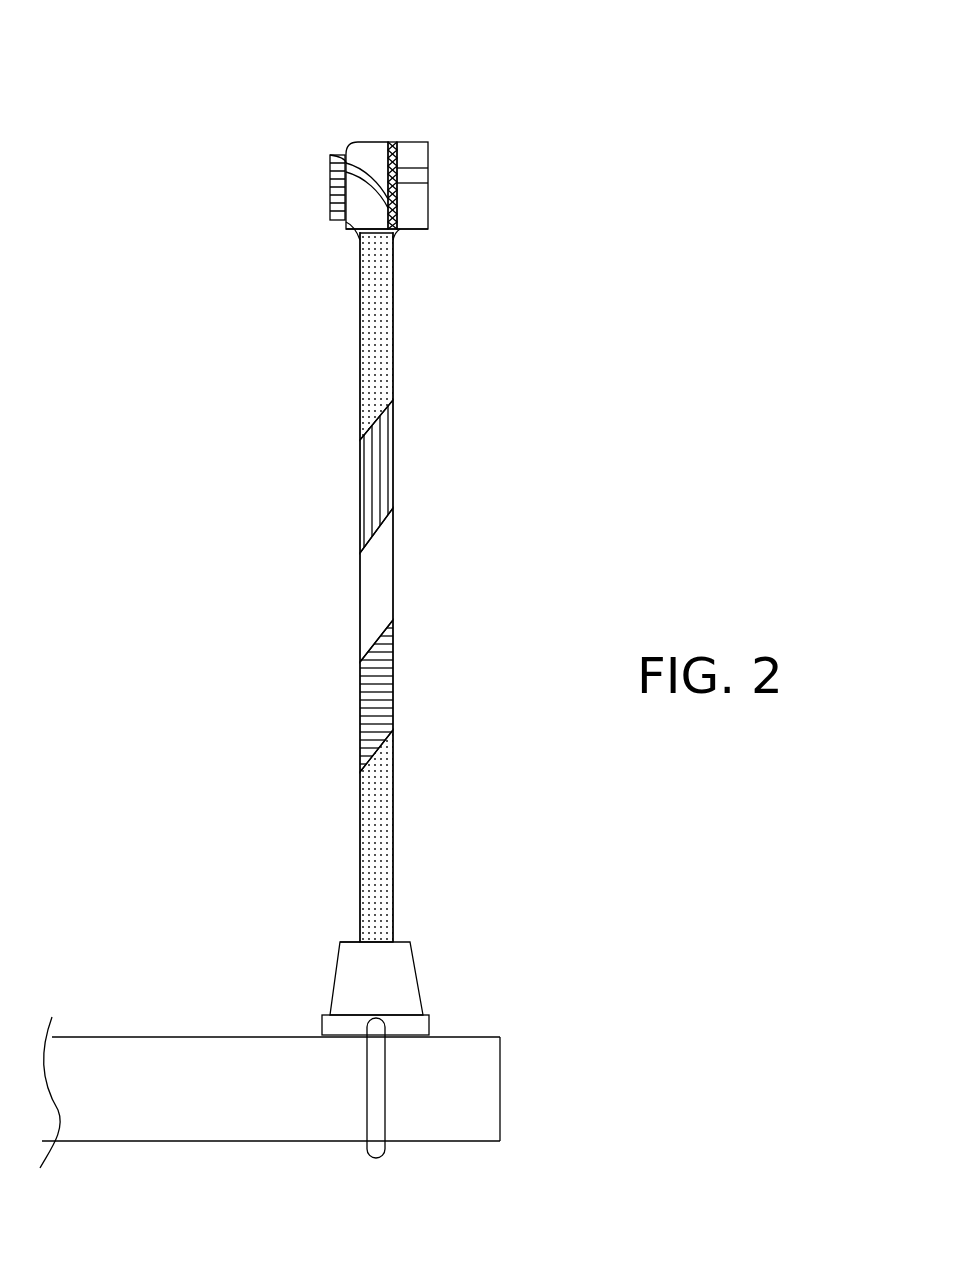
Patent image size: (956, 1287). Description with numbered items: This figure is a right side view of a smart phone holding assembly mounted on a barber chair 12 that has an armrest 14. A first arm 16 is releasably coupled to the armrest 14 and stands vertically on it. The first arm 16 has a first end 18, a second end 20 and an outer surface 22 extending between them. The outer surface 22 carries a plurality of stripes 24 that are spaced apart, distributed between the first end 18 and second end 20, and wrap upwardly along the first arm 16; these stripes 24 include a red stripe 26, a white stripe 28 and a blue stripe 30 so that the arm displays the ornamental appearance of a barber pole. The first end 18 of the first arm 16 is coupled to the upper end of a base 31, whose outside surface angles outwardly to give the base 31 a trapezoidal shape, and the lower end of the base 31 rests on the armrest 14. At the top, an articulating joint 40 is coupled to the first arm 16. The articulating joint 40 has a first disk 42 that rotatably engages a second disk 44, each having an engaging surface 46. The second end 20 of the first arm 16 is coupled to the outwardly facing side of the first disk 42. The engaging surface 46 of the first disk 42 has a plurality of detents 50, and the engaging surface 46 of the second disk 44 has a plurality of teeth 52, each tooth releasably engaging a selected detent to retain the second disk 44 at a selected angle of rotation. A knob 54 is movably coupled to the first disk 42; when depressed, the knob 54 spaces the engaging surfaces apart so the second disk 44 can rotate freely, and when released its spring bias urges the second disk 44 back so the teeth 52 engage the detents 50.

The barber chair 12 is at (525, 1050).
The armrest 14 is at (214, 1037).
The first arm 16 is at (370, 587).
The first end 18 is at (372, 942).
The second end 20 is at (346, 222).
The outer surface 22 is at (372, 358).
The stripes 24 is at (408, 672).
The red stripe 26 is at (345, 493).
The white stripe 28 is at (345, 584).
The blue stripe 30 is at (345, 706).
The base 31 is at (340, 940).
The articulating joint 40 is at (375, 147).
The first disk 42 is at (375, 143).
The second disk 44 is at (416, 229).
The engaging surface 46 is at (399, 183).
The detents 50 is at (397, 160).
The teeth 52 is at (330, 155).
The knob 54 is at (330, 170).